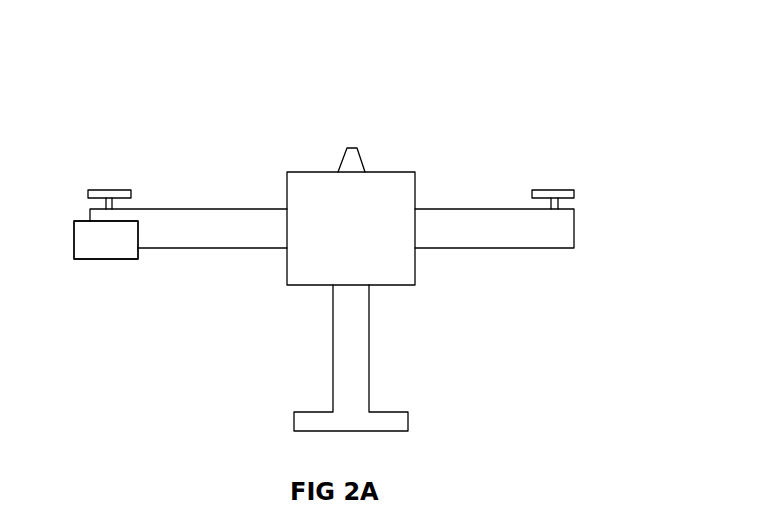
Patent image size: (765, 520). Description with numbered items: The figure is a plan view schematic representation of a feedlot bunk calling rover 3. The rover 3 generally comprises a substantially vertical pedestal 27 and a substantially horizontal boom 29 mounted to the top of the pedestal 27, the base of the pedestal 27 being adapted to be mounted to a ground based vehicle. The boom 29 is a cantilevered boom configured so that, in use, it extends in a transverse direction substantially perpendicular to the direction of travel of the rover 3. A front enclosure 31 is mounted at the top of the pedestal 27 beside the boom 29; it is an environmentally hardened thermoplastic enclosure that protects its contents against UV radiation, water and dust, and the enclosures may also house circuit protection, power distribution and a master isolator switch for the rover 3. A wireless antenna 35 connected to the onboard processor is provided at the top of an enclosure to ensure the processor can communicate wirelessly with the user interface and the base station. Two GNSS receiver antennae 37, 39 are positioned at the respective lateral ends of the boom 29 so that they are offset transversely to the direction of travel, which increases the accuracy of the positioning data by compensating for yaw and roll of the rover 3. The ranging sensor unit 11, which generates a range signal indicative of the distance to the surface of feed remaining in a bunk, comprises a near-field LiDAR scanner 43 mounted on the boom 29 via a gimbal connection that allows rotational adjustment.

The rover 3 is at (473, 88).
The front enclosure 31 is at (318, 252).
The boom 29 is at (449, 200).
The wireless antenna 35 is at (353, 148).
The antenna 37 is at (95, 188).
The antenna 39 is at (558, 187).
The LiDAR scanner 43 is at (100, 263).
The ranging sensor unit 11 is at (106, 240).
The pedestal 27 is at (375, 326).